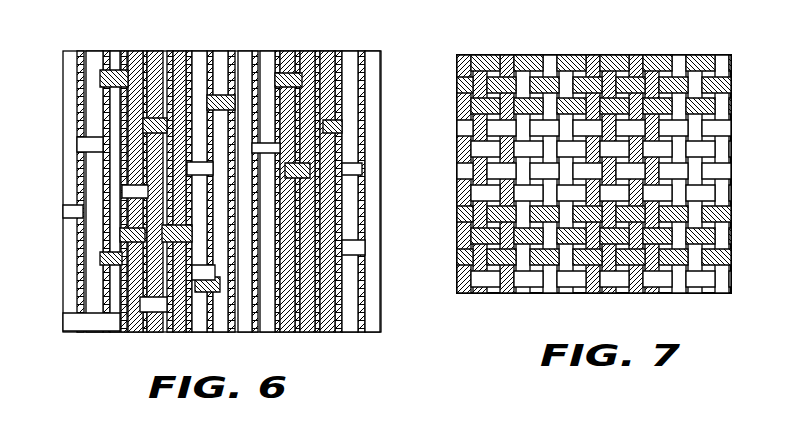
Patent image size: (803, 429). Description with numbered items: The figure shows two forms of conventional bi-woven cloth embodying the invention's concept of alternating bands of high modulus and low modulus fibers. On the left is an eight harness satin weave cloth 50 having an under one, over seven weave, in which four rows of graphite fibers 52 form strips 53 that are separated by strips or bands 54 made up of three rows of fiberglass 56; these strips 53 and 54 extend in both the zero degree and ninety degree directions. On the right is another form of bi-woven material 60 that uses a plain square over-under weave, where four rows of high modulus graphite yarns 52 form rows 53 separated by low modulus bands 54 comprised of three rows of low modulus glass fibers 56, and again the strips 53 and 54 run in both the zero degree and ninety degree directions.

In FIG. 6, the 8 harness satin weave cloth 50 is at (322, 17).
In FIG. 6, the graphite fibers 52 is at (260, 333).
In FIG. 7, the graphite fibers 52 is at (470, 196).
In FIG. 6, the strips 53 is at (275, 47).
In FIG. 7, the strips 53 is at (600, 53).
In FIG. 6, the strips or bands 54 is at (188, 47).
In FIG. 7, the strips or bands 54 is at (668, 53).
In FIG. 6, the fiberglass 56 is at (175, 333).
In FIG. 7, the fiberglass 56 is at (462, 258).
In FIG. 7, the bi-woven material 60 is at (700, 44).